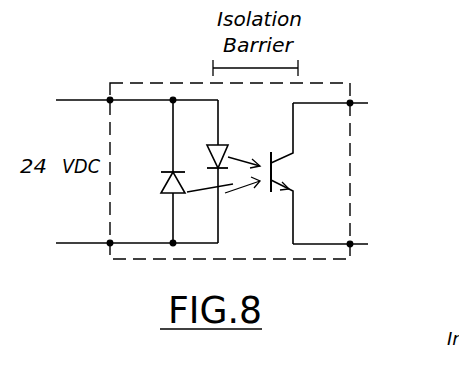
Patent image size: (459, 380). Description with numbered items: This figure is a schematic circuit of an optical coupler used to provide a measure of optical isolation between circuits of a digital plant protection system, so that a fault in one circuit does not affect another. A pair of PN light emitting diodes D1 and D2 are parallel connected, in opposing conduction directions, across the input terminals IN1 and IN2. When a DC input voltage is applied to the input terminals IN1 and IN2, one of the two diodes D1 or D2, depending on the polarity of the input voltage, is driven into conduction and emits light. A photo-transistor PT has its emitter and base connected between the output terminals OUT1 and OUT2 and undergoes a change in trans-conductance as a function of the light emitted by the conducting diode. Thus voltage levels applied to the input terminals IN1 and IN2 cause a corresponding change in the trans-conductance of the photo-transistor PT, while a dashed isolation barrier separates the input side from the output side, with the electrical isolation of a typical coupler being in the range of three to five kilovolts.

The input terminal IN1 is at (137, 90).
The input terminal IN2 is at (137, 256).
The light emitting diode D1 is at (223, 171).
The light emitting diode D2 is at (152, 171).
The photo-transistor PT is at (304, 173).
The output terminal OUT1 is at (358, 104).
The output terminal OUT2 is at (359, 246).